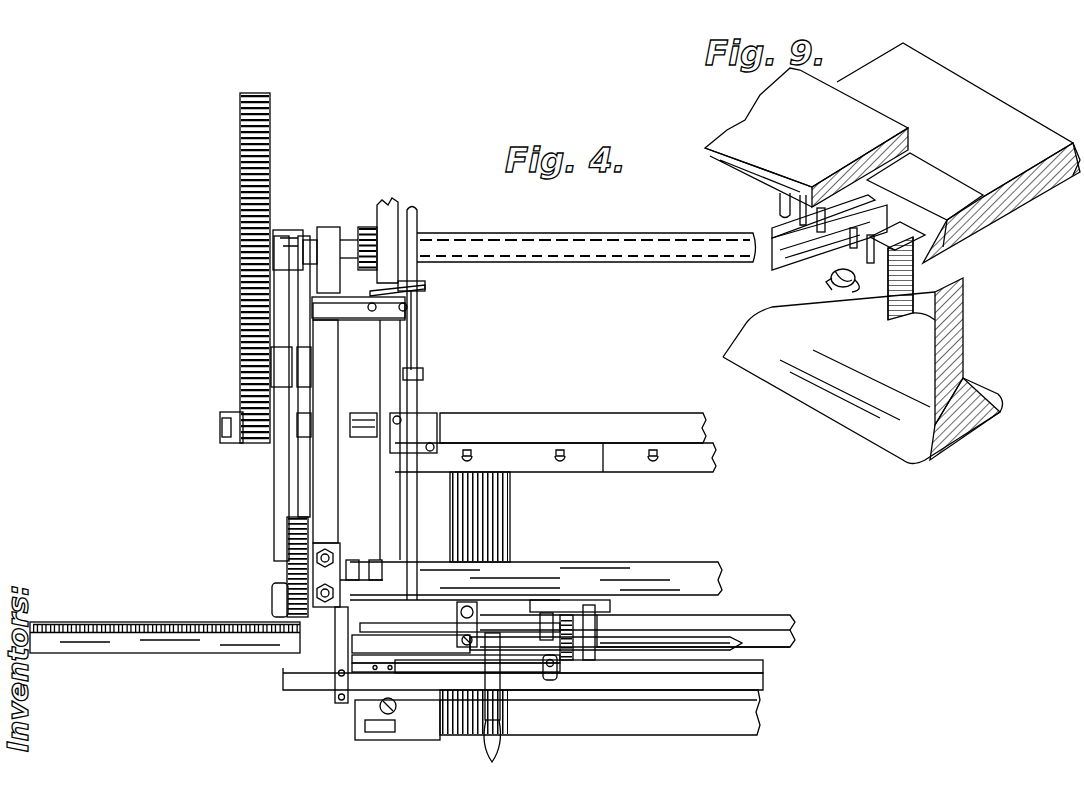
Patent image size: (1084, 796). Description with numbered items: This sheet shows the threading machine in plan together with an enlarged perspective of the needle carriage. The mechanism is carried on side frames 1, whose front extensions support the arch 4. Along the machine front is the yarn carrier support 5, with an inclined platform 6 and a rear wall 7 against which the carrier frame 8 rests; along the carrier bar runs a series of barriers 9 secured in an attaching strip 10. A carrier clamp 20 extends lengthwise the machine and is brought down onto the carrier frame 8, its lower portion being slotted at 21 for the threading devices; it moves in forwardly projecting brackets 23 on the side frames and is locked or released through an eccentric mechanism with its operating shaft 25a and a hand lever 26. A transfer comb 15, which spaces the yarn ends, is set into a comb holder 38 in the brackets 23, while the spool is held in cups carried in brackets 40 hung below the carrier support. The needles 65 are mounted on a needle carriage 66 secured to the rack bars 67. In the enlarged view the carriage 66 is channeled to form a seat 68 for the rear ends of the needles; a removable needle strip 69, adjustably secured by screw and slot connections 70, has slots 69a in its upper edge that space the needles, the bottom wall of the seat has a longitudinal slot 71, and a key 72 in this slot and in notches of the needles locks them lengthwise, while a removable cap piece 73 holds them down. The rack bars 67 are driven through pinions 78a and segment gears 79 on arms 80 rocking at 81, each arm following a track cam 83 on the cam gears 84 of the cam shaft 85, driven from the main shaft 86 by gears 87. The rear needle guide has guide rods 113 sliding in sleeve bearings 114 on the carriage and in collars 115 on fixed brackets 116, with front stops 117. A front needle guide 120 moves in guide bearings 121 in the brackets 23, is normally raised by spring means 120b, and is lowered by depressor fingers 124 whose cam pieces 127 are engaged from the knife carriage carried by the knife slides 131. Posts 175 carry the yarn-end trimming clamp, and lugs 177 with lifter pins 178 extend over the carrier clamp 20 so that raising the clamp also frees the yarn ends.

In FIG. 4, the side frames 1 is at (325, 489).
In FIG. 4, the top member or arch 4 is at (692, 568).
In FIG. 4, the yarn carrier support 5 is at (798, 617).
In FIG. 4, the bottom portion or platform 6 is at (772, 642).
In FIG. 4, the rear wall 7 is at (770, 628).
In FIG. 4, the carrier frame 8 is at (178, 640).
In FIG. 4, the barriers or guides 9 is at (108, 624).
In FIG. 4, the attaching strip 10 is at (162, 624).
In FIG. 4, the transfer comb 15 is at (762, 702).
In FIG. 4, the carrier clamp 20 is at (352, 642).
In FIG. 4, the slot 21 is at (352, 620).
In FIG. 4, the brackets 23 is at (335, 662).
In FIG. 4, the operating shaft 25a is at (705, 636).
In FIG. 4, the hand lever 26 is at (493, 760).
In FIG. 4, the comb holder 38 is at (765, 683).
In FIG. 4, the spool holding brackets 40 is at (396, 728).
In FIG. 4, the needles 65 is at (511, 531).
In FIG. 9, the needles 65 is at (787, 272).
In FIG. 4, the needle bar or carriage 66 is at (586, 416).
In FIG. 9, the needle bar or carriage 66 is at (988, 268).
In FIG. 4, the needle slides or rack bars 67 is at (418, 348).
In FIG. 9, the needle seat 68 is at (912, 227).
In FIG. 9, the needle-holding and spacing strip 69 is at (873, 300).
In FIG. 9, the slots 69a is at (778, 208).
In FIG. 9, the screw and slot connections 70 is at (842, 290).
In FIG. 9, the longitudinal slot 71 is at (955, 282).
In FIG. 9, the key 72 is at (918, 316).
In FIG. 9, the removable cap piece 73 is at (757, 165).
In FIG. 4, the pinions 78a is at (290, 587).
In FIG. 4, the segment gears 79 is at (287, 533).
In FIG. 4, the segment arms 80 is at (300, 462).
In FIG. 4, the arm pivot 81 is at (303, 357).
In FIG. 4, the track cam 83 is at (277, 240).
In FIG. 4, the cam gears 84 is at (241, 122).
In FIG. 4, the cam shaft 85 is at (598, 238).
In FIG. 4, the main shaft 86 is at (362, 412).
In FIG. 4, the gears 87 is at (258, 435).
In FIG. 4, the guide rods 113 is at (418, 318).
In FIG. 4, the sleeve bearings 114 is at (420, 414).
In FIG. 4, the collars 115 is at (426, 285).
In FIG. 4, the fixed brackets 116 is at (372, 291).
In FIG. 4, the front stops 117 is at (424, 375).
In FIG. 4, the front needle guide 120 is at (765, 665).
In FIG. 4, the spring means 120b is at (418, 645).
In FIG. 4, the guide bearings 121 is at (385, 645).
In FIG. 4, the depressor fingers 124 is at (551, 682).
In FIG. 4, the cam pieces 127 is at (548, 612).
In FIG. 4, the knife slides 131 is at (360, 574).
In FIG. 4, the posts 175 is at (460, 610).
In FIG. 4, the lugs 177 is at (456, 628).
In FIG. 4, the lifter pins 178 is at (475, 632).